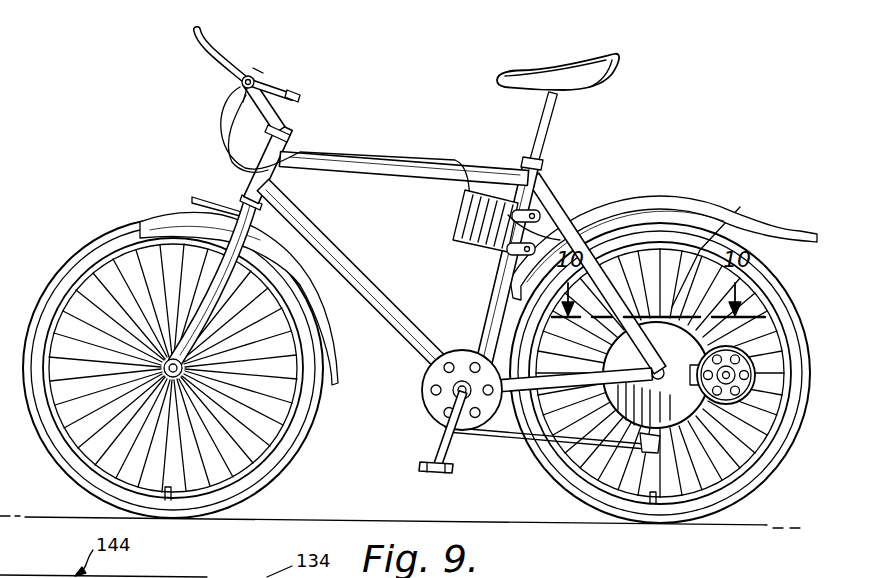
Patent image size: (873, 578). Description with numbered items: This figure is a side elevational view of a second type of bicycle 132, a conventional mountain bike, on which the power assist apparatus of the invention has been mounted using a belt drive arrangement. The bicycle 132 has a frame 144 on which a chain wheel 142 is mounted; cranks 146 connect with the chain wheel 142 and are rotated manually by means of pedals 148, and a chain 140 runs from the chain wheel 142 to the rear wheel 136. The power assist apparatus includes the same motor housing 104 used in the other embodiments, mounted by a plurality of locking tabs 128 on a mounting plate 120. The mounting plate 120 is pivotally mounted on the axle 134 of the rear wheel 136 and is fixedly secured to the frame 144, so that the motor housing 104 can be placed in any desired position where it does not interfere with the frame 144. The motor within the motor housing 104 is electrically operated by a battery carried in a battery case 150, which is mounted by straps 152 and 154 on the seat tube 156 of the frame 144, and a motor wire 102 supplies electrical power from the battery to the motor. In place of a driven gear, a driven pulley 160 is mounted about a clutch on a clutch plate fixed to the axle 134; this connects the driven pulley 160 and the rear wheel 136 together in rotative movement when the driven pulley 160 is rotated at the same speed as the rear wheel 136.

The motor wire 102 is at (740, 207).
The motor housing 104 is at (770, 480).
The mounting plate 120 is at (743, 317).
The locking tabs 128 is at (745, 495).
The bicycle 132 is at (452, 138).
The axle 134 is at (527, 442).
The rear wheel 136 is at (533, 463).
The chain 140 is at (482, 318).
The chain wheel 142 is at (422, 392).
The frame 144 is at (328, 232).
The cranks 146 is at (445, 432).
The pedals 148 is at (420, 465).
The battery case 150 is at (476, 248).
The strap 152 is at (548, 222).
The strap 154 is at (540, 205).
The seat tube 156 is at (497, 290).
The driven pulley 160 is at (577, 497).